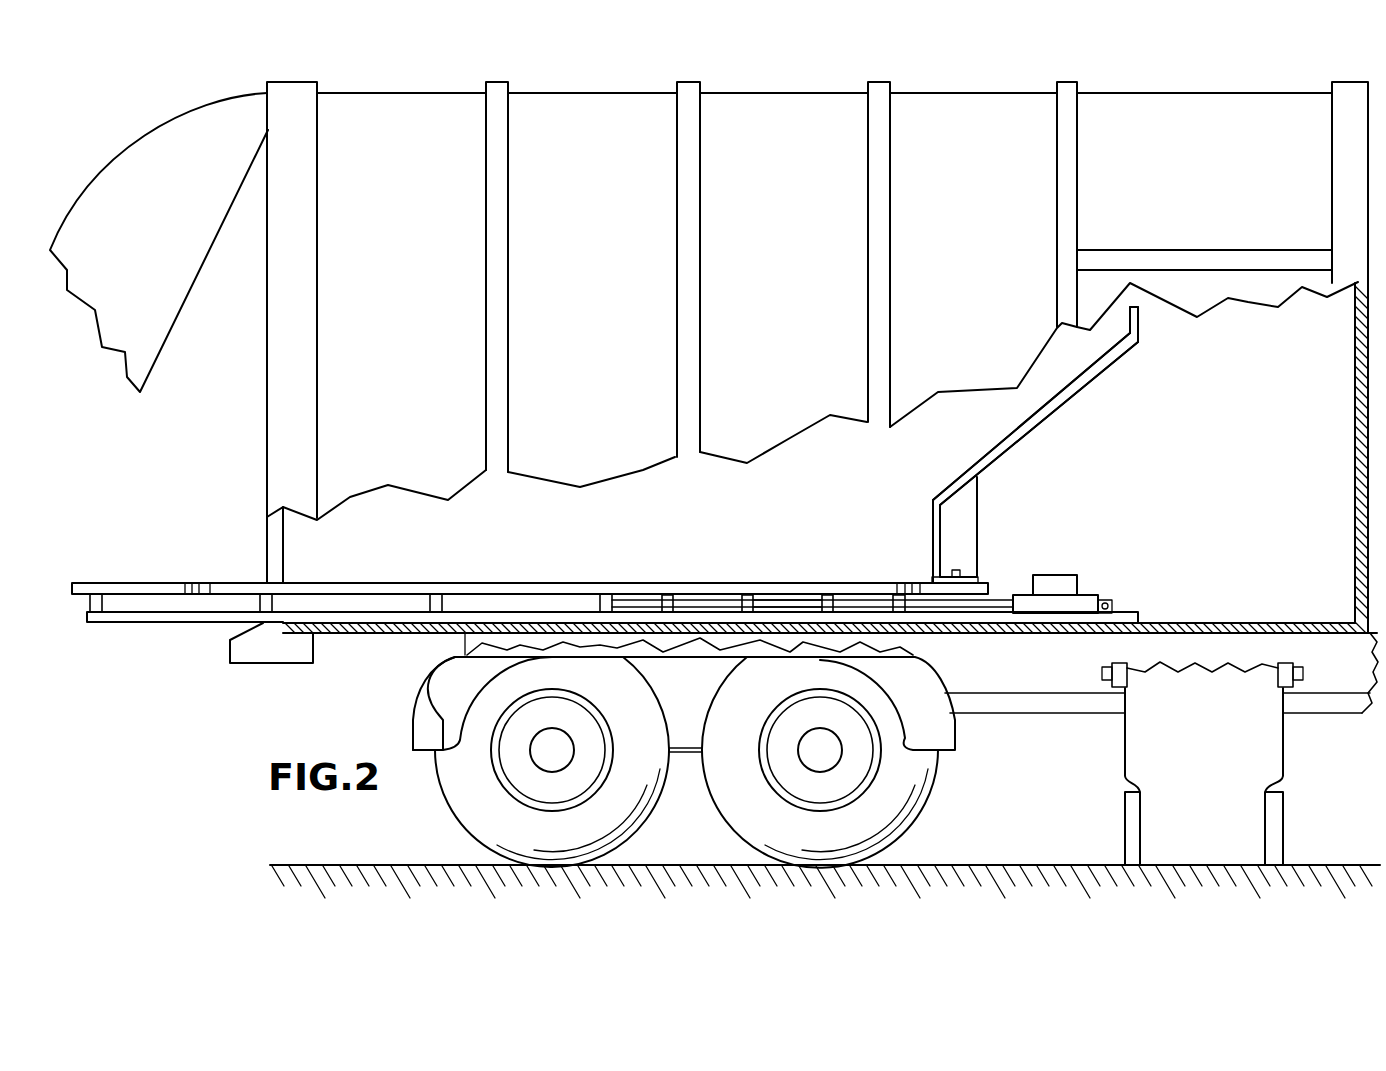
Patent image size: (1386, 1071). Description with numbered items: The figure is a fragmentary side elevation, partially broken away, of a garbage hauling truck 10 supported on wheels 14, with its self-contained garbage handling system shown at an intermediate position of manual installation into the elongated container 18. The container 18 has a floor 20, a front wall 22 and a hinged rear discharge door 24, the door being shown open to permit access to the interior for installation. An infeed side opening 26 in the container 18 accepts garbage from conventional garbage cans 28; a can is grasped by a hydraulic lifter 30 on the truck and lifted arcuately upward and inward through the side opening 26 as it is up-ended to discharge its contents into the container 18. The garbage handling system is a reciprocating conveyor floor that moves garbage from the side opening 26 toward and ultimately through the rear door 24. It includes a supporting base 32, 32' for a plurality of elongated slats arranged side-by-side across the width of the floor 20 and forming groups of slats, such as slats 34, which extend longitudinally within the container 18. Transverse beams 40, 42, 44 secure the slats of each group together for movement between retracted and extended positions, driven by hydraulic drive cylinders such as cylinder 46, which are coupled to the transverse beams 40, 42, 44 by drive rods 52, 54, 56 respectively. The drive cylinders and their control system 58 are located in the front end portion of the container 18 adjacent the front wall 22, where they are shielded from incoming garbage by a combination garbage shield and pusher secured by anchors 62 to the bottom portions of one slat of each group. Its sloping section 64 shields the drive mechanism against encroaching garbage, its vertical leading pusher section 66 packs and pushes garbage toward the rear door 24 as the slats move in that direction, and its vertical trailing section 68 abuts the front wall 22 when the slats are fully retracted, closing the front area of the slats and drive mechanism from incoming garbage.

The garbage hauling truck 10 is at (100, 113).
The wheels 14 is at (458, 824).
The container 18 is at (583, 93).
The floor 20 is at (1238, 622).
The front wall 22 is at (1356, 474).
The rear discharge door 24 is at (178, 326).
The infeed side opening 26 is at (1199, 125).
The garbage cans 28 is at (1125, 742).
The hydraulic lifter 30 is at (1102, 673).
The supporting base 32 is at (612, 647).
The supporting base 32' is at (351, 573).
The slats 34 is at (367, 583).
The transverse beam 40 is at (828, 595).
The transverse beam 42 is at (747, 595).
The transverse beam 44 is at (667, 595).
The hydraulic drive cylinder 46 is at (1090, 595).
The drive rod 52 is at (868, 600).
The drive rod 54 is at (788, 600).
The drive rod 56 is at (707, 600).
The control system 58 is at (1053, 575).
The anchors 62 is at (960, 572).
The sloping section 64 is at (1017, 429).
The vertical leading pusher section 66 is at (933, 522).
The vertical trailing section 68 is at (1140, 318).